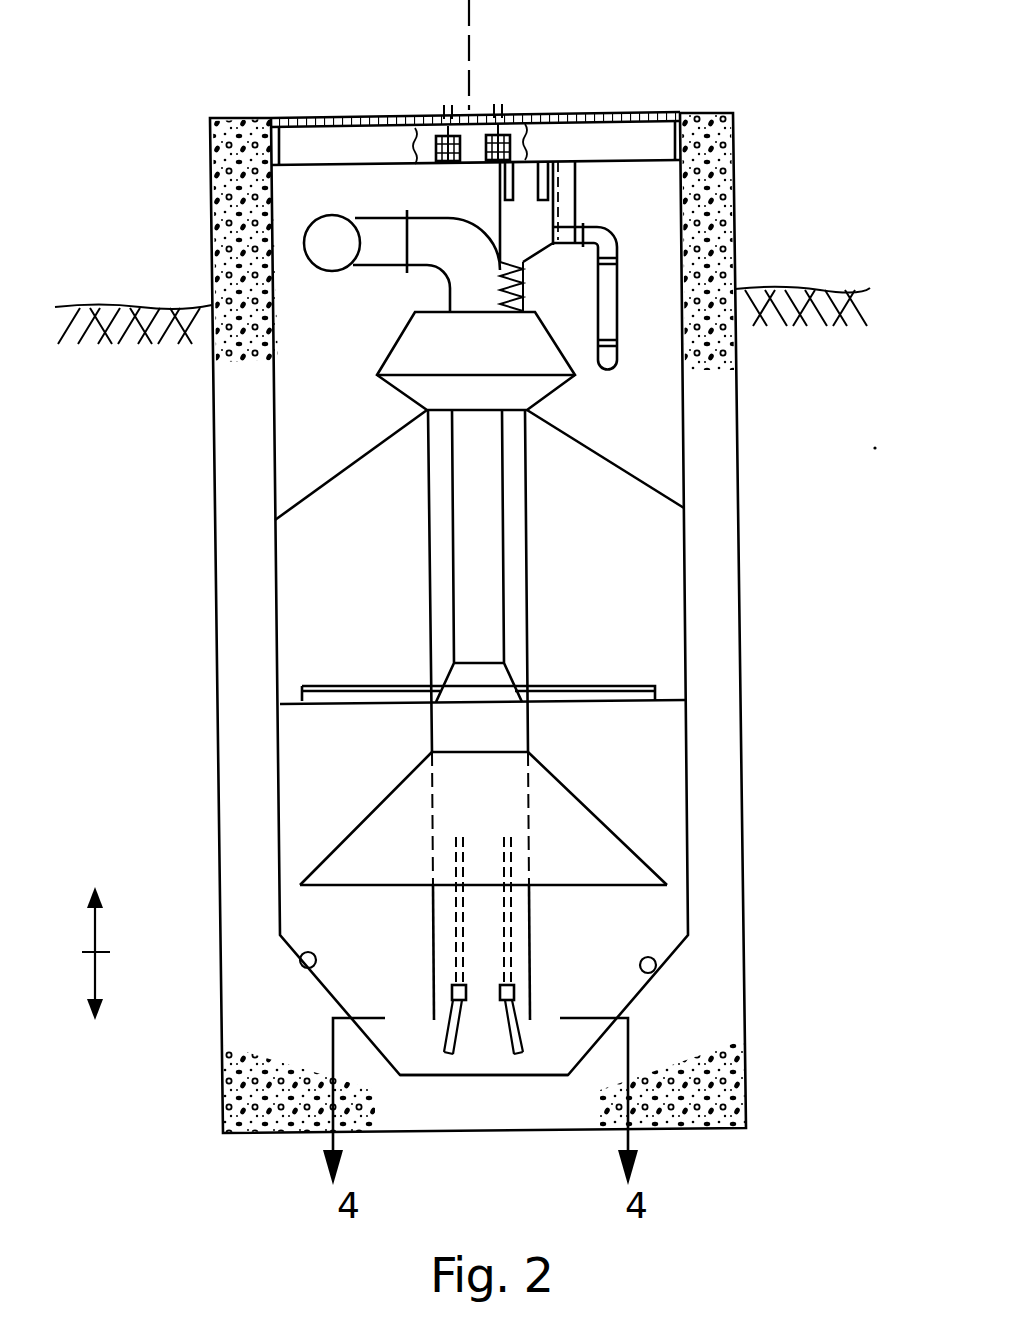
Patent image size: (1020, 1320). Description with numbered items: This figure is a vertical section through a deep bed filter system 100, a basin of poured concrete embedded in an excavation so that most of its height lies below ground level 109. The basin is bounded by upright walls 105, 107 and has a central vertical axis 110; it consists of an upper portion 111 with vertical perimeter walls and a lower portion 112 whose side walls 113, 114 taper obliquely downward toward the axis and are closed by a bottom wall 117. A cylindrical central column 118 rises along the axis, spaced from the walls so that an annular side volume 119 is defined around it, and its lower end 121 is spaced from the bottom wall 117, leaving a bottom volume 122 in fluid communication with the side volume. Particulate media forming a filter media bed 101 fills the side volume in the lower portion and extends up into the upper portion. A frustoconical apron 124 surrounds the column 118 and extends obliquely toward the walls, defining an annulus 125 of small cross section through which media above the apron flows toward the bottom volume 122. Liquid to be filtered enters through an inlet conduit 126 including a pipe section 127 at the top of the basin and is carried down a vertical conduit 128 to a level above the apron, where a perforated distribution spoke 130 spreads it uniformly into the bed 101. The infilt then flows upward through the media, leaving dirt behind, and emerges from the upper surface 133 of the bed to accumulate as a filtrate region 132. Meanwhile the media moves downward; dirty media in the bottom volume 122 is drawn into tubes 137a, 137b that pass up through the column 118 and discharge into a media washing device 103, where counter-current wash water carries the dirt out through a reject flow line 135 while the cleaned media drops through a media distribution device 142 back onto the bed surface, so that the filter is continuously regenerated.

The deep bed filter system 100 is at (230, 66).
The filter media bed 101 is at (660, 605).
The media washing device 103 is at (548, 212).
The upright wall 105 is at (235, 548).
The upright wall 107 is at (712, 697).
The ground level 109 is at (100, 305).
The central vertical axis 110 is at (470, 52).
The upper portion 111 is at (100, 930).
The lower portion 112 is at (103, 980).
The side wall 113 is at (302, 962).
The side wall 114 is at (655, 972).
The bottom wall 117 is at (487, 1076).
The central column 118 is at (538, 531).
The annular side volume 119 is at (672, 560).
The lower end of the central column 121 is at (560, 1005).
The bottom volume 122 is at (565, 1050).
The frustoconical apron 124 is at (607, 823).
The annulus 125 is at (677, 878).
The inlet conduit 126 is at (385, 200).
The pipe section 127 is at (310, 222).
The vertical conduit 128 is at (503, 518).
The distribution spoke 130 is at (615, 678).
The filtrate region 132 is at (295, 360).
The upper surface of the media bed 133 is at (598, 438).
The reject flow line 135 is at (618, 285).
The tube 137a is at (456, 925).
The tube 137b is at (521, 930).
The media distribution device 142 is at (372, 370).